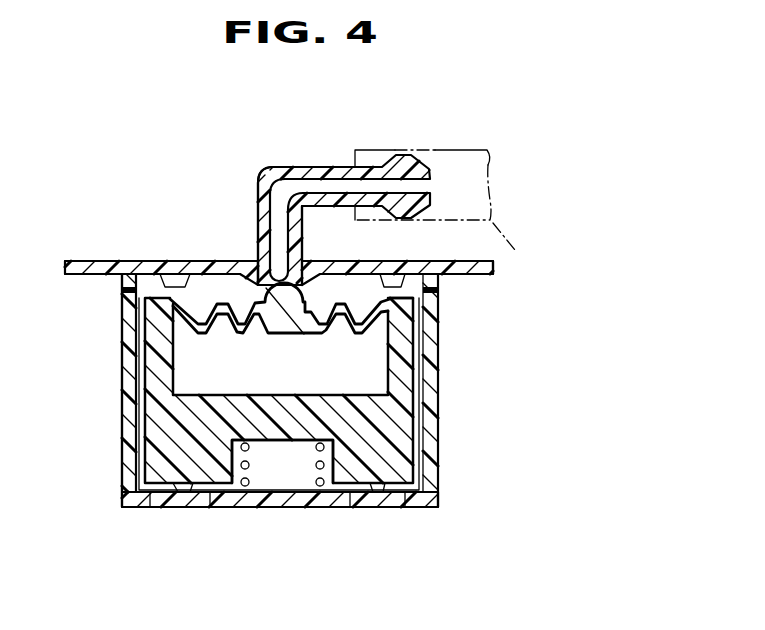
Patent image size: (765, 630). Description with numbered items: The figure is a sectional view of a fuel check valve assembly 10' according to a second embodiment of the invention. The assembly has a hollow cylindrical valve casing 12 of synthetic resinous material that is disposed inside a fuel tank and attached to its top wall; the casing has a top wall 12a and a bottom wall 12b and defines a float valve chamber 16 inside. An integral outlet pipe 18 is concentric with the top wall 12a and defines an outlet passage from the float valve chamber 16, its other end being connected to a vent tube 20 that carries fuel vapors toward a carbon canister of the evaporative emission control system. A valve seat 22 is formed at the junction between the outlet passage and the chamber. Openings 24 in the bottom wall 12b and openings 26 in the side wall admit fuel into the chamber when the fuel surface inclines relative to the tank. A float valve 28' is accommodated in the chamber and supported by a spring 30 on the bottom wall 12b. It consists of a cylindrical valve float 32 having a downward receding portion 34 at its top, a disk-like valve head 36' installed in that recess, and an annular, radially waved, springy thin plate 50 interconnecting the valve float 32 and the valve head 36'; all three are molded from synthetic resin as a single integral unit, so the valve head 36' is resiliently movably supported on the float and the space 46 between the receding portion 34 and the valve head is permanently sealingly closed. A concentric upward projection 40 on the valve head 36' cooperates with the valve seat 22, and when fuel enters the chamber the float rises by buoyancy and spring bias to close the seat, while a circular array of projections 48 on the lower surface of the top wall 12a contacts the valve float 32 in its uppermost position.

The check valve assembly 10' is at (344, 180).
The valve casing 12 is at (130, 259).
The top wall 12a is at (213, 259).
The bottom wall 12b is at (255, 509).
The float valve chamber 16 is at (136, 352).
The outlet pipe 18 is at (430, 164).
The vent tube 20 is at (422, 268).
The valve seat 22 is at (270, 251).
The openings 24 is at (150, 509).
The openings 26 is at (122, 291).
The float valve 28' is at (343, 401).
The spring 30 is at (322, 470).
The valve float 32 is at (398, 412).
The receding portion 34 is at (193, 384).
The valve head 36' is at (452, 345).
The upward projection 40 is at (306, 262).
The space 46 is at (312, 378).
The projections 48 is at (183, 283).
The thin plate 50 is at (360, 322).